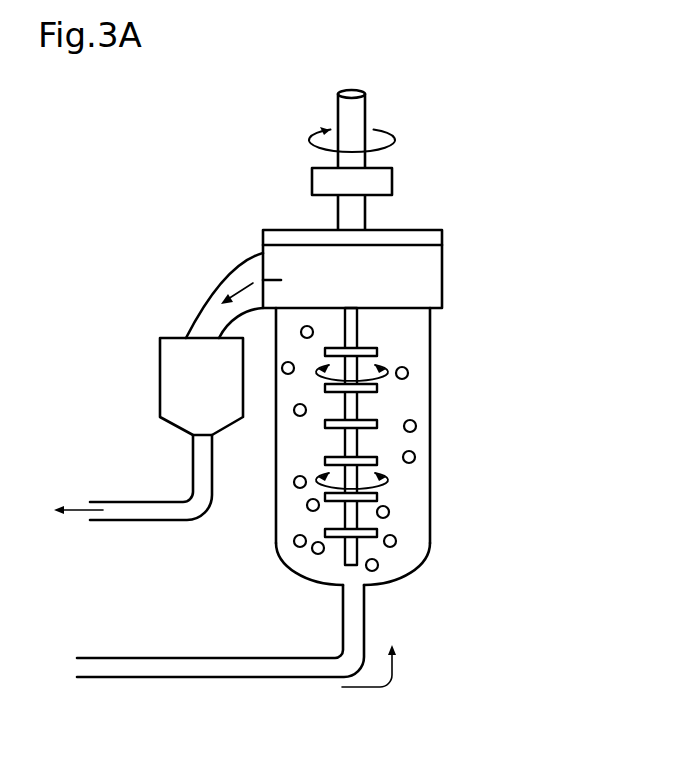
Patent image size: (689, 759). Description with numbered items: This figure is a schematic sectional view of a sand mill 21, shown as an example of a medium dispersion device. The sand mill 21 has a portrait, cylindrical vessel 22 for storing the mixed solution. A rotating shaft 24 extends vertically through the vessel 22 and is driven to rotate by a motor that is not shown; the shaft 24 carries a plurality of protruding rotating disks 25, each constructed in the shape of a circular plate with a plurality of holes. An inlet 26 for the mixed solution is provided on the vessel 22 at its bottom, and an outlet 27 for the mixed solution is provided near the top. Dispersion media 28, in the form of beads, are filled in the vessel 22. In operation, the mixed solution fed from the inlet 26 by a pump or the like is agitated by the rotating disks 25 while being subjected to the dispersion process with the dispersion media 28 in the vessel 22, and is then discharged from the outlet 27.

The sand mill 21 is at (498, 309).
The cylindrical vessel 22 is at (278, 532).
The rotating shaft 24 is at (351, 443).
The rotating disk 25 is at (376, 494).
The inlet 26 is at (213, 670).
The outlet 27 is at (212, 317).
The dispersion media 28 is at (416, 421).